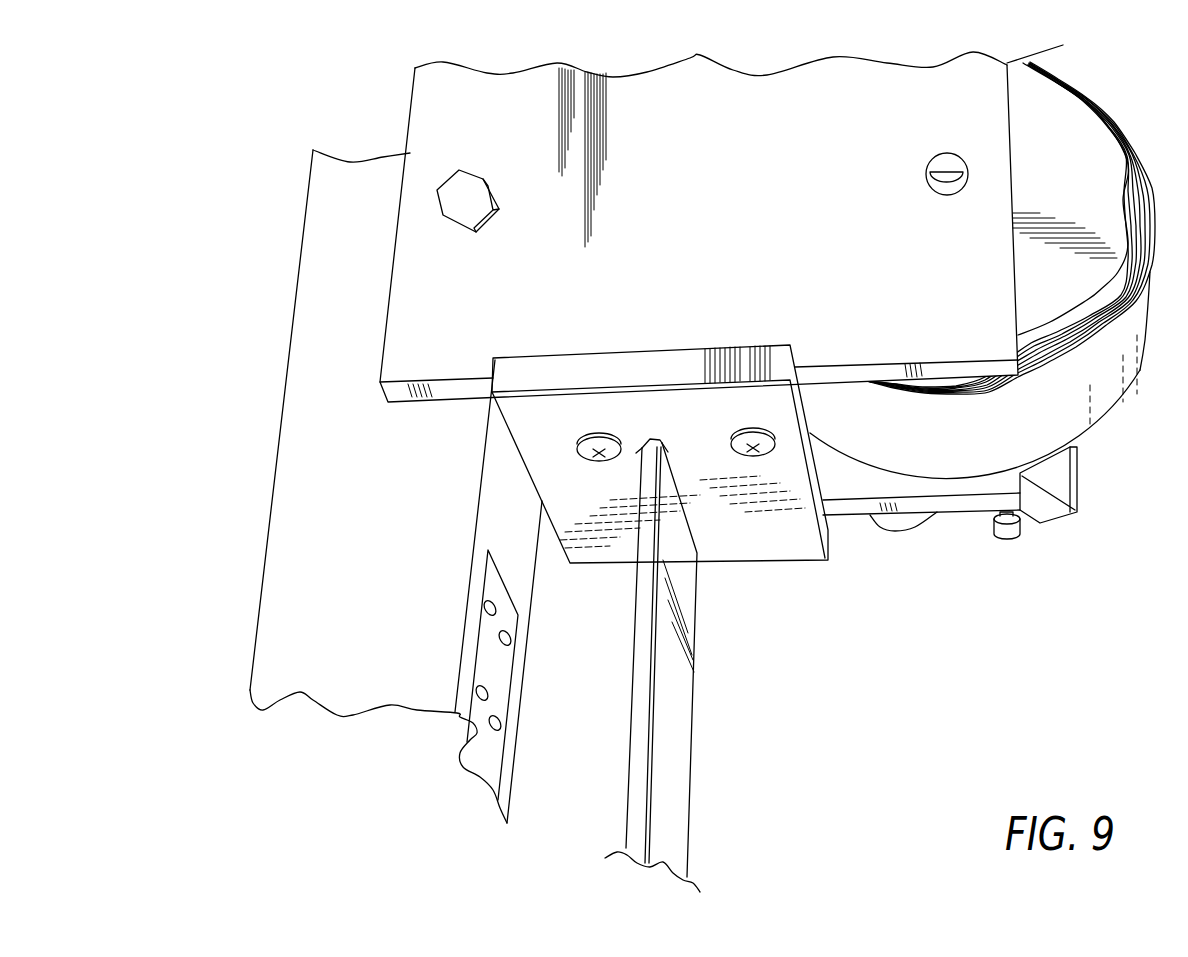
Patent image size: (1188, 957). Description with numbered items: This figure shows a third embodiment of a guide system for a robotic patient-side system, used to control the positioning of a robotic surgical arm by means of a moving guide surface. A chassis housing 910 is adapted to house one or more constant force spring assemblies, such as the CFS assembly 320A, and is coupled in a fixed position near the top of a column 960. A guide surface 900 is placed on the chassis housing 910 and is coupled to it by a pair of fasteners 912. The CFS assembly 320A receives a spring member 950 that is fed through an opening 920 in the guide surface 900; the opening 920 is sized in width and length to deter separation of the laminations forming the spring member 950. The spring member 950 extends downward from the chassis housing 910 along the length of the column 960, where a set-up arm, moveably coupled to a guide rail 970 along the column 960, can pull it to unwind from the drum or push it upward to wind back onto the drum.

The CFS assembly 320A is at (1053, 134).
The guide surface 900 is at (797, 544).
The chassis housing 910 is at (833, 191).
The fasteners 912 is at (747, 430).
The opening 920 is at (647, 456).
The spring member 950 is at (688, 573).
The column 960 is at (335, 467).
The guide rail 970 is at (497, 682).